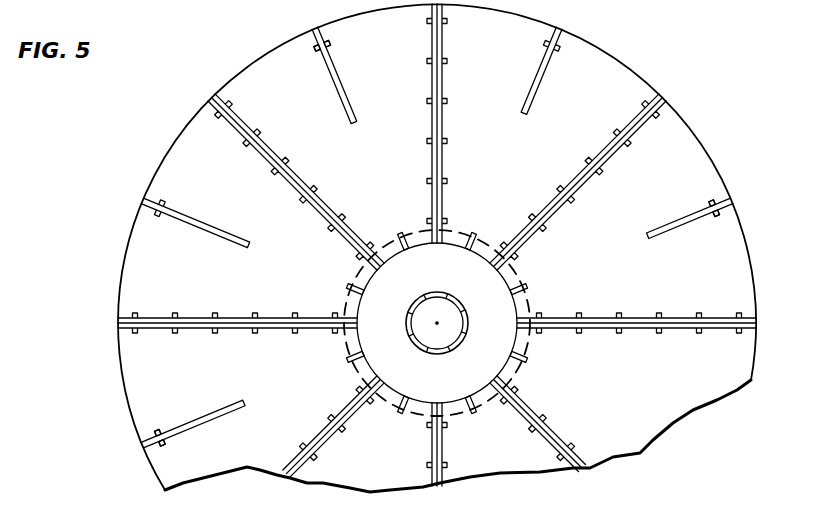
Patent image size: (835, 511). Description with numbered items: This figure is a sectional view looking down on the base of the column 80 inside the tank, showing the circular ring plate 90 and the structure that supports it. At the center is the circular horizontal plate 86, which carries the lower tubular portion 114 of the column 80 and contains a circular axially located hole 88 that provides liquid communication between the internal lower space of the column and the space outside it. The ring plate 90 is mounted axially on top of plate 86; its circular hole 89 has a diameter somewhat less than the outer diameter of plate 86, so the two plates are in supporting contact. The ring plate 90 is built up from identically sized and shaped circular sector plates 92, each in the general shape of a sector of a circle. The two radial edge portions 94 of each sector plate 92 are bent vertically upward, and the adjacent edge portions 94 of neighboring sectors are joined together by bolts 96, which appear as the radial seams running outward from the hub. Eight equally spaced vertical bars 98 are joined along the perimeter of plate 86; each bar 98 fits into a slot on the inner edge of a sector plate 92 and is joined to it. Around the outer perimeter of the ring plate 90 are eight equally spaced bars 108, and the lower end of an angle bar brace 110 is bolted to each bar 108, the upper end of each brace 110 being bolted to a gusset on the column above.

The column 80 is at (409, 300).
The circular horizontal plate 86 is at (489, 288).
The circular axially located hole 88 is at (436, 340).
The circular hole 89 is at (362, 343).
The circular ring plate 90 is at (726, 165).
The circular sector plate 92 is at (308, 127).
The radial edge portion 94 is at (603, 150).
The bolts 96 is at (447, 101).
The vertical bar 98 is at (398, 236).
The bar 108 is at (308, 36).
The angle bar brace 110 is at (345, 97).
The lower tubular portion 114 is at (467, 327).